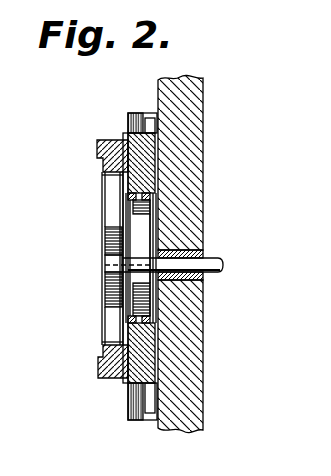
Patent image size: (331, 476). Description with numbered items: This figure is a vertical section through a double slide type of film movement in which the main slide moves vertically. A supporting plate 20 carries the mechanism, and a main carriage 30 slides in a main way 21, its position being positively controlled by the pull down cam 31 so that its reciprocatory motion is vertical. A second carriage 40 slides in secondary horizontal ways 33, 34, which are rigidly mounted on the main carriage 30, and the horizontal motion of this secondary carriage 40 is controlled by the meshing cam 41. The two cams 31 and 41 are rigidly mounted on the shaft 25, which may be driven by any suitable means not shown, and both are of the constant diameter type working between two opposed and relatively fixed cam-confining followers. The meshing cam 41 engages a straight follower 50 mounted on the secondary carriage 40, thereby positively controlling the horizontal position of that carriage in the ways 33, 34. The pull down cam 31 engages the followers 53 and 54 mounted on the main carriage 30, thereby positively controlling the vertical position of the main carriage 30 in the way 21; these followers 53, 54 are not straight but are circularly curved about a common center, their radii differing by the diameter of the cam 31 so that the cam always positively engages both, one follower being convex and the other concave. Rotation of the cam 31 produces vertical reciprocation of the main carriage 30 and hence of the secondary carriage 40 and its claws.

The supporting plate 20 is at (186, 161).
The main way 21 is at (143, 113).
The shaft 25 is at (220, 258).
The main carriage 30 is at (141, 373).
The cam 31 is at (148, 232).
The secondary horizontal way 33 is at (105, 140).
The secondary horizontal way 34 is at (98, 364).
The second carriage 40 is at (98, 187).
The cam 41 is at (105, 241).
The follower 50 is at (105, 206).
The follower 53 is at (147, 199).
The follower 54 is at (150, 318).